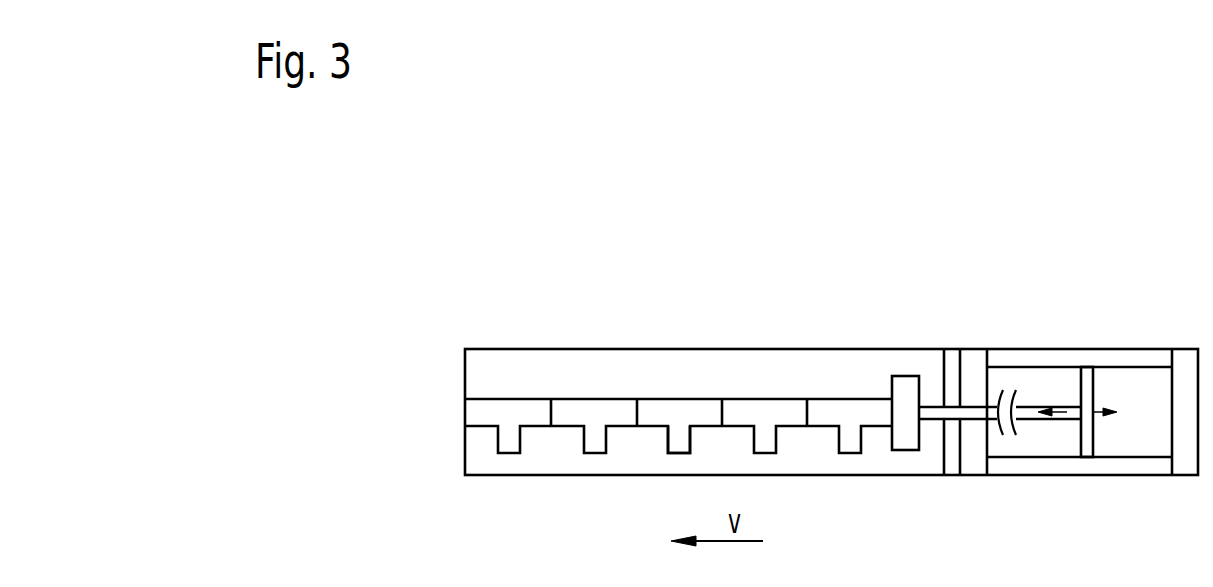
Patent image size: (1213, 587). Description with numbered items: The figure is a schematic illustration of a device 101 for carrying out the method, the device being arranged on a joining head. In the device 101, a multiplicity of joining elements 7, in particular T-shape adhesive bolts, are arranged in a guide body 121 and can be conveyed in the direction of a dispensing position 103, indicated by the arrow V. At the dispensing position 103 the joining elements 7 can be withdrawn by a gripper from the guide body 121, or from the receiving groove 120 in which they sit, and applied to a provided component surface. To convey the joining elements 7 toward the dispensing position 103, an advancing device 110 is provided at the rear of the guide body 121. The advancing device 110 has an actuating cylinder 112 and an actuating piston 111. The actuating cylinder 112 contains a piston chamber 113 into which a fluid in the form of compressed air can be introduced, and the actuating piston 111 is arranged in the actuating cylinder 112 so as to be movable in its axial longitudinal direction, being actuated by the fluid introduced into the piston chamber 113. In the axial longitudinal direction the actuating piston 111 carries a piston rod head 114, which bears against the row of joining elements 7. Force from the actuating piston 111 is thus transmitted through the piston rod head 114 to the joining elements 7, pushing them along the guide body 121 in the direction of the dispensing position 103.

The device 101 is at (703, 258).
The guide body 121 is at (517, 362).
The dispensing position 103 is at (477, 412).
The receiving groove 120 is at (592, 408).
The joining element 7 is at (673, 405).
The piston rod head 114 is at (905, 388).
The advancing device 110 is at (1025, 328).
The actuating cylinder 112 is at (1128, 349).
The actuating piston 111 is at (1030, 413).
The piston chamber 113 is at (1137, 435).